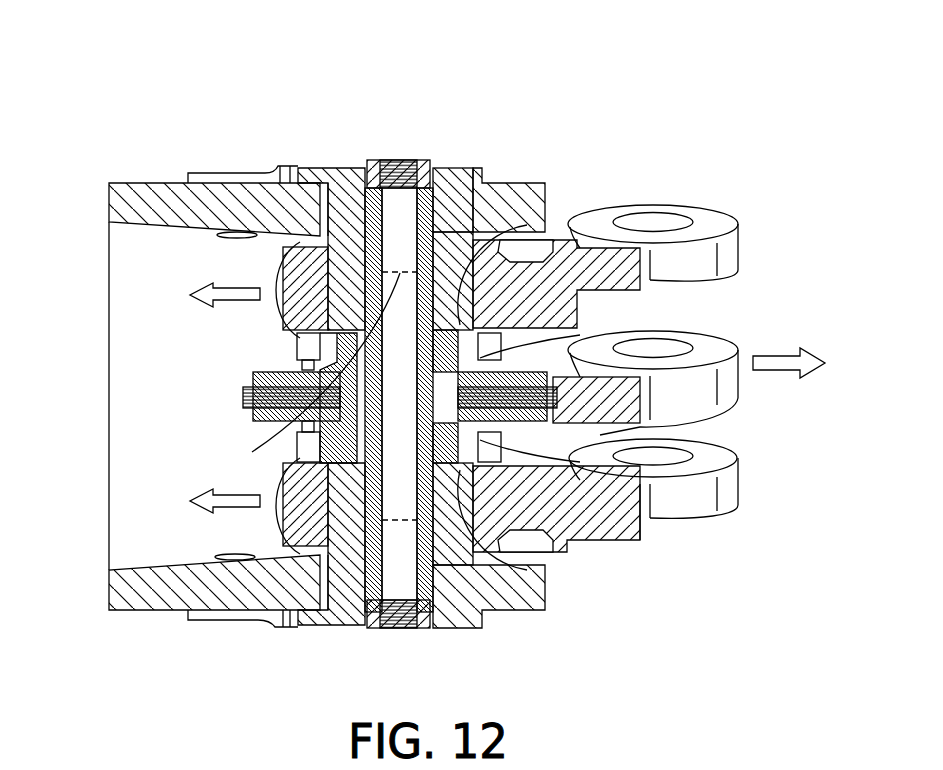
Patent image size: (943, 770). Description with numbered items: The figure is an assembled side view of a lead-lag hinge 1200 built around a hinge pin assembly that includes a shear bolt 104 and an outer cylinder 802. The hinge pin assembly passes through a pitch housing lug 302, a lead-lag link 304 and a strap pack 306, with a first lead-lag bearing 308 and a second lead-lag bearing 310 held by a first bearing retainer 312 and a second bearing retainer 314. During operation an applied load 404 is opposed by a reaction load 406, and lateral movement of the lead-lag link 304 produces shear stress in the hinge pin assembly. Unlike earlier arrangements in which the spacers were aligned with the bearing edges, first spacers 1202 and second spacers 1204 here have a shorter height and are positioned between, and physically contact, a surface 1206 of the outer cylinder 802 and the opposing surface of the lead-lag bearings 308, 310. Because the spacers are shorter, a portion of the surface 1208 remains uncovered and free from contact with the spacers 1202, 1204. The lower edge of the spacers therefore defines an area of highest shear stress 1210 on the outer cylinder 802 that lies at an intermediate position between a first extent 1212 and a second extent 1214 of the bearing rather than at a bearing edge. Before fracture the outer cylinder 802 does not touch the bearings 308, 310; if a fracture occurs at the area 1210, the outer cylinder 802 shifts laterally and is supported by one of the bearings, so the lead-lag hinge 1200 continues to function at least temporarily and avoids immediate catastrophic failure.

The assembled lead-lag hinge 1200 is at (352, 55).
The pitch housing lug 302 is at (128, 343).
The second bearing retainer 314 is at (225, 172).
The first bearing retainer 312 is at (225, 621).
The second lead-lag bearing 310 is at (460, 166).
The first lead-lag bearing 308 is at (455, 629).
The lead-lag link 304 is at (655, 205).
The strap pack 306 is at (247, 413).
The shear bolt 104 is at (397, 633).
The applied load 404 is at (240, 287).
The reaction load 406 is at (782, 353).
The outer cylinder 802 is at (733, 414).
The first spacer 1202 is at (397, 522).
The second spacer 1204 is at (447, 250).
The surface of the hinge pin assembly 1206 is at (358, 297).
The surface 1208 is at (452, 313).
The area of highest shear stress 1210 is at (318, 424).
The first extent 1212 is at (473, 160).
The second extent 1214 is at (458, 332).